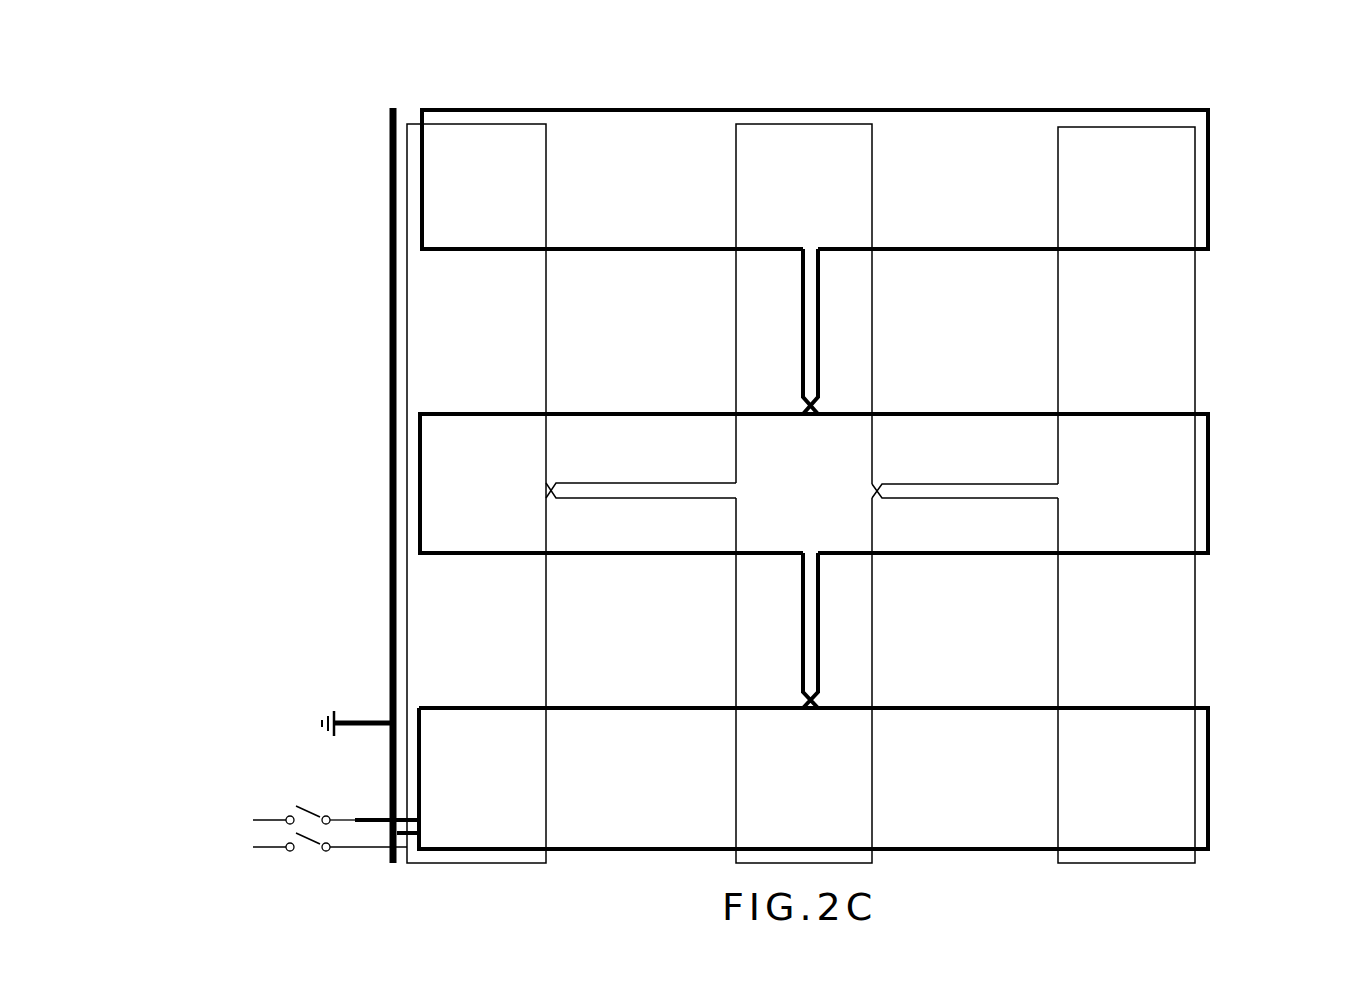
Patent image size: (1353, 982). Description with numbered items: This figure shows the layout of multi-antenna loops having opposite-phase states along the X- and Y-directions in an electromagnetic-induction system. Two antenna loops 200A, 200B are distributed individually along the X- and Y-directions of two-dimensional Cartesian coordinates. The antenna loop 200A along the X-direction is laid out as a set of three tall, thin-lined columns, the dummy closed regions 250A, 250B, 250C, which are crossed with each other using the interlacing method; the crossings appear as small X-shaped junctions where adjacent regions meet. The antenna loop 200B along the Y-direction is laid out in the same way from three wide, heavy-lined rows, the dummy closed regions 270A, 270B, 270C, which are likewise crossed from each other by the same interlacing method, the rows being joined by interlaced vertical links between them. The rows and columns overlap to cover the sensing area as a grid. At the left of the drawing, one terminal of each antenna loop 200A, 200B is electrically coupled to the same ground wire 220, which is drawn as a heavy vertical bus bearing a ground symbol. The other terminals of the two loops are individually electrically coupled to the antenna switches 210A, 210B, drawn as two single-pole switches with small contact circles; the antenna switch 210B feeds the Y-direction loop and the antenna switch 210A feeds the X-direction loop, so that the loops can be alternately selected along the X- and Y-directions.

The ground wire 220 is at (389, 215).
The dummy closed region 250A is at (478, 167).
The dummy closed region 250B is at (783, 170).
The dummy closed region 250C is at (1120, 170).
The dummy closed region 270A is at (1200, 795).
The dummy closed region 270B is at (1200, 485).
The dummy closed region 270C is at (1200, 222).
The antenna switch 210A is at (266, 850).
The antenna switch 210B is at (262, 819).
The antenna loop 200A is at (355, 850).
The antenna loop 200B is at (355, 818).